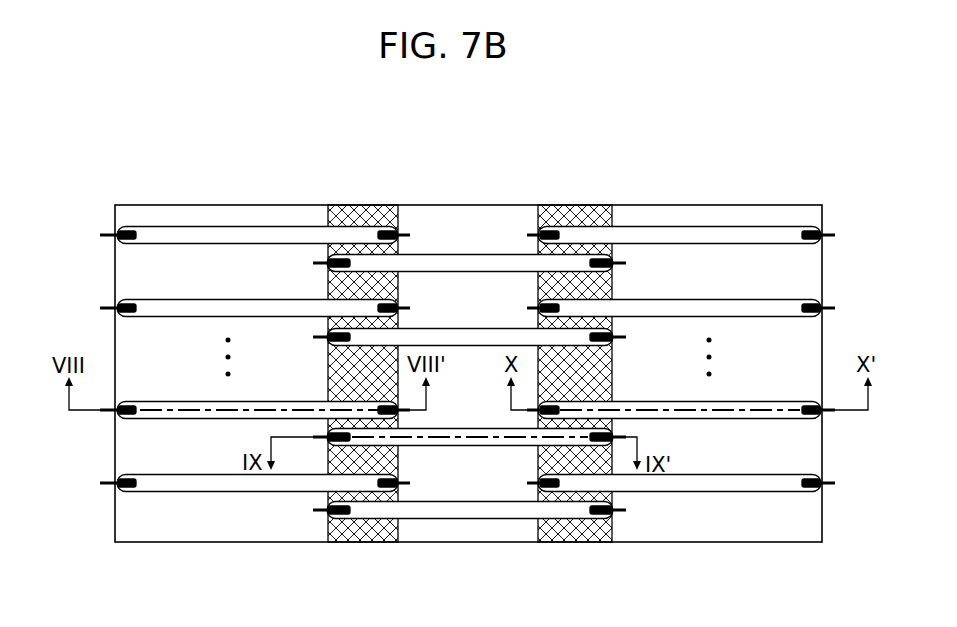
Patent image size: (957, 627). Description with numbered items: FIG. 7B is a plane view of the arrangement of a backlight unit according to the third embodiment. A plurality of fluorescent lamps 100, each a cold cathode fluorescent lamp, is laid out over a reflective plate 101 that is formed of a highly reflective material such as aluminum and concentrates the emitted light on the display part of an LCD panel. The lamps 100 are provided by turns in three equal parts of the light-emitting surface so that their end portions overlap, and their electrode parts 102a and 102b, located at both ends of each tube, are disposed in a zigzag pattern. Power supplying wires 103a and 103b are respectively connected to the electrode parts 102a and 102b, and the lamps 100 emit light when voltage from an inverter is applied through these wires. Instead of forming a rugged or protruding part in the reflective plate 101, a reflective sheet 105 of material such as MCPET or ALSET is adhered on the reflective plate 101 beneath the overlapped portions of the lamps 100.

The fluorescent lamp 100 is at (247, 232).
The reflective plate 101 is at (498, 220).
The electrode part 102a is at (124, 244).
The electrode part 102b is at (380, 228).
The power supplying wire 103a is at (116, 229).
The power supplying wire 103b is at (409, 230).
The reflective sheet 105 is at (372, 528).